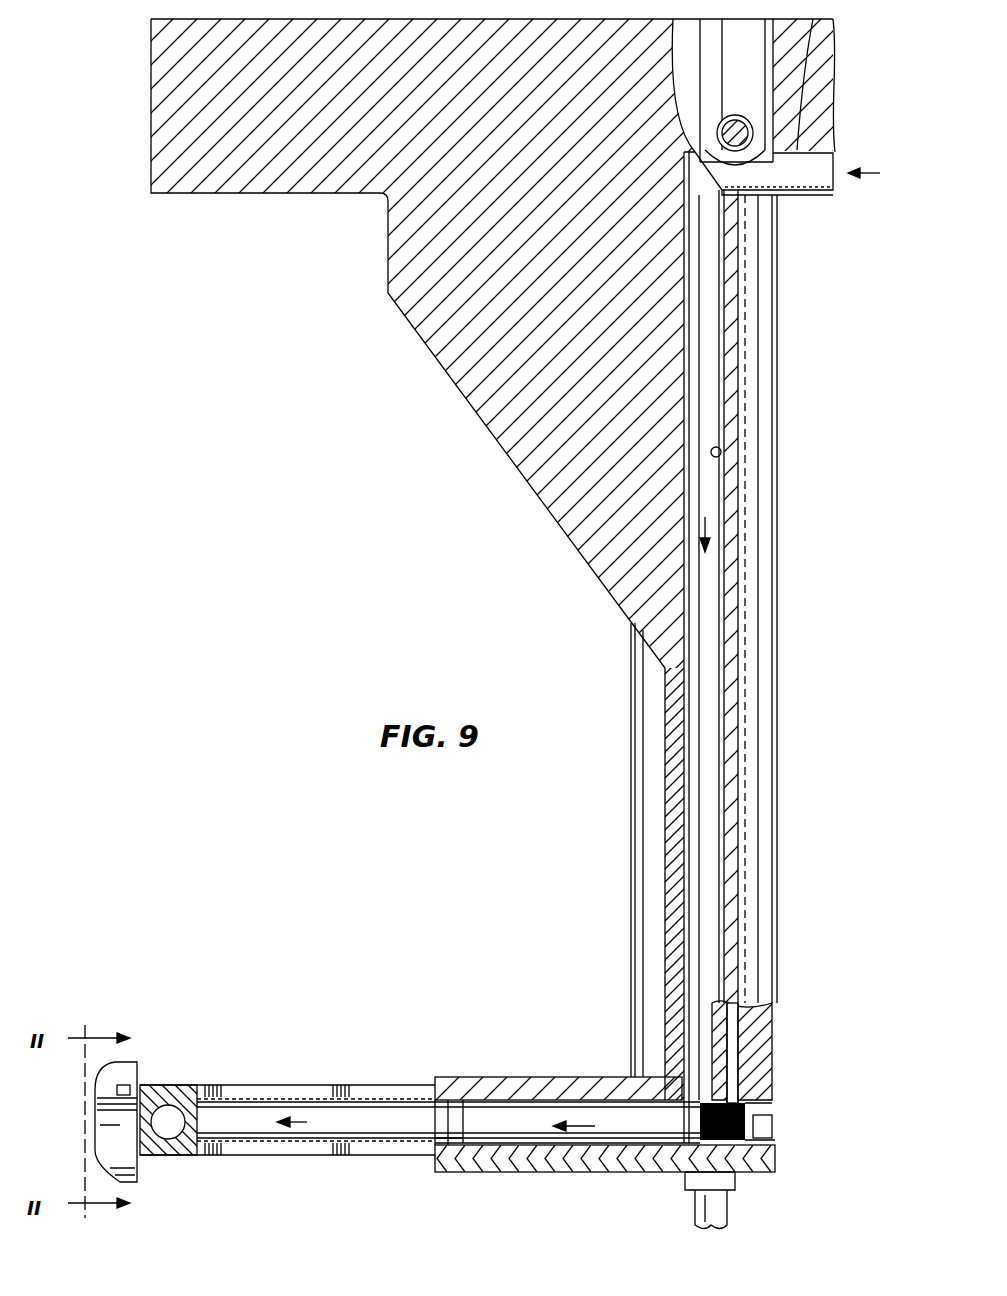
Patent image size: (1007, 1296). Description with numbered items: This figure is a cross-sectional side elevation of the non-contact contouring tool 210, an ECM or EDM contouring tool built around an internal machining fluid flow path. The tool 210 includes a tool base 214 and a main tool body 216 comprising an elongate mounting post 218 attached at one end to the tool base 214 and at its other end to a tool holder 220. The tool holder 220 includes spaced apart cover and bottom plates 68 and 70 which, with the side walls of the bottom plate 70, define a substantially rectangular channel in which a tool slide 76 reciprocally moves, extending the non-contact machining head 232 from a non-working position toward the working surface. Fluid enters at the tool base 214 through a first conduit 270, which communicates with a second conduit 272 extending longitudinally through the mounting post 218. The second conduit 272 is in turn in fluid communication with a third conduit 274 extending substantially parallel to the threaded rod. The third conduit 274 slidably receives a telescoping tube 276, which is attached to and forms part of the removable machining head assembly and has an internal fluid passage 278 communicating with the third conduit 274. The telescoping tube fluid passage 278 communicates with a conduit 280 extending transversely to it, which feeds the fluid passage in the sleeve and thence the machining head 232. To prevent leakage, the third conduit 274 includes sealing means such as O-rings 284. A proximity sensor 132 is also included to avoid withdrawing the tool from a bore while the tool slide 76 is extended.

The tool base 214 is at (151, 109).
The first conduit 270 is at (826, 195).
The second conduit 272 is at (722, 437).
The non-contact contouring tool 210 is at (476, 494).
The main tool body 216 is at (626, 657).
The mounting post 218 is at (628, 853).
The tool holder 220 is at (505, 1070).
The bottom plate 70 is at (495, 1083).
The cover plate 68 is at (587, 1163).
The third conduit 274 is at (600, 1147).
The O-rings 284 is at (460, 1143).
The tool slide 76 is at (300, 1157).
The telescoping tube 276 is at (215, 1095).
The telescoping tube fluid passage 278 is at (240, 1135).
The conduit 280 is at (157, 1110).
The non-contact machining head 232 is at (100, 1088).
The proximity sensor 132 is at (727, 1205).